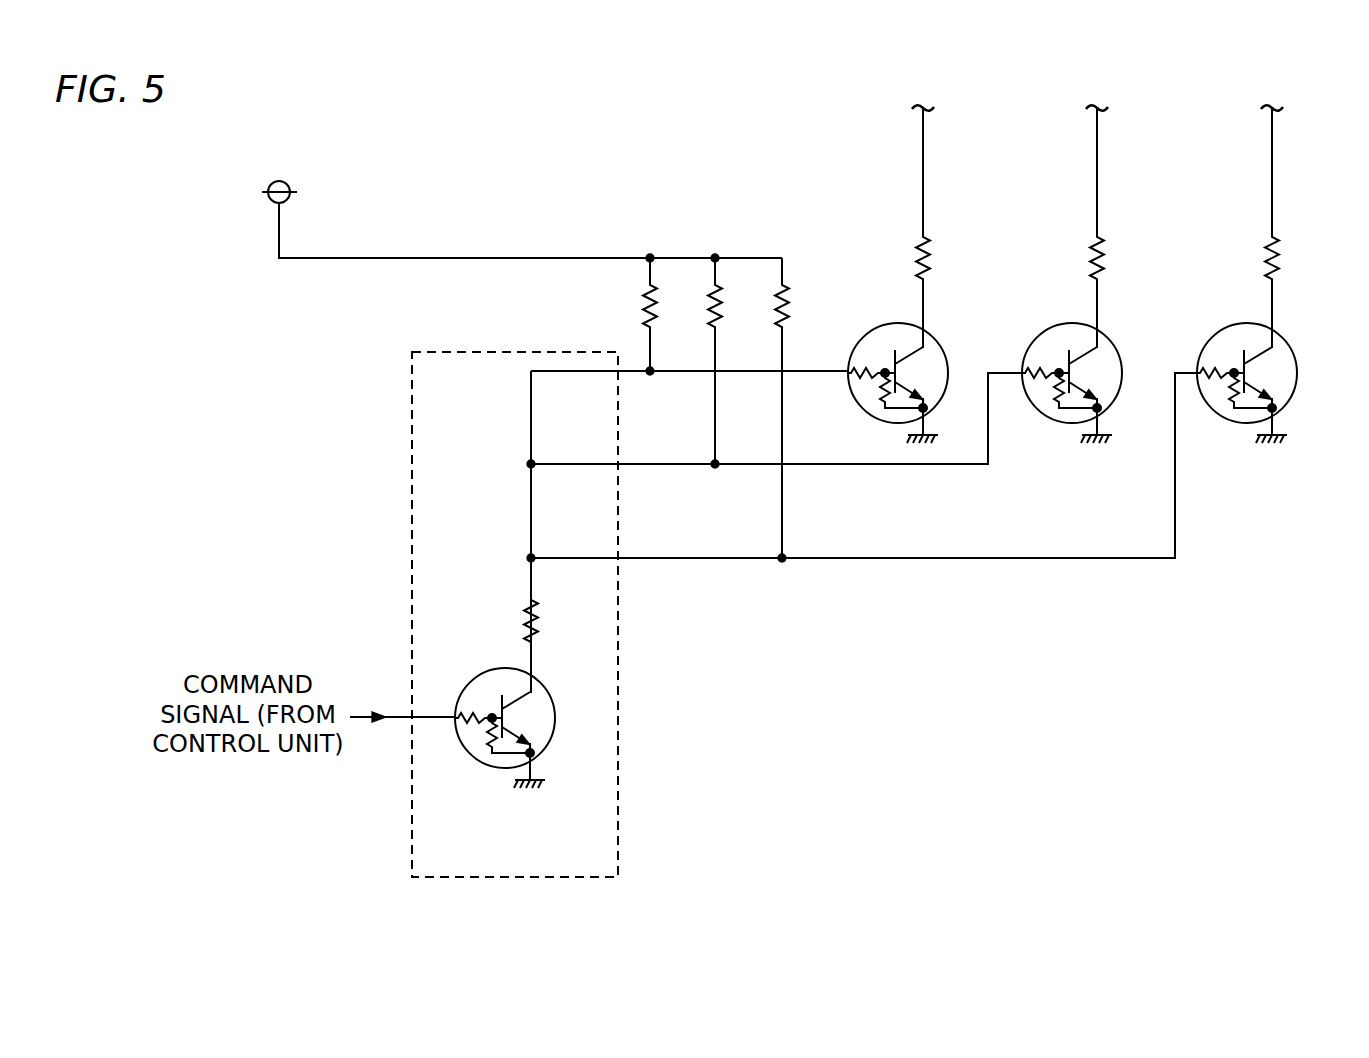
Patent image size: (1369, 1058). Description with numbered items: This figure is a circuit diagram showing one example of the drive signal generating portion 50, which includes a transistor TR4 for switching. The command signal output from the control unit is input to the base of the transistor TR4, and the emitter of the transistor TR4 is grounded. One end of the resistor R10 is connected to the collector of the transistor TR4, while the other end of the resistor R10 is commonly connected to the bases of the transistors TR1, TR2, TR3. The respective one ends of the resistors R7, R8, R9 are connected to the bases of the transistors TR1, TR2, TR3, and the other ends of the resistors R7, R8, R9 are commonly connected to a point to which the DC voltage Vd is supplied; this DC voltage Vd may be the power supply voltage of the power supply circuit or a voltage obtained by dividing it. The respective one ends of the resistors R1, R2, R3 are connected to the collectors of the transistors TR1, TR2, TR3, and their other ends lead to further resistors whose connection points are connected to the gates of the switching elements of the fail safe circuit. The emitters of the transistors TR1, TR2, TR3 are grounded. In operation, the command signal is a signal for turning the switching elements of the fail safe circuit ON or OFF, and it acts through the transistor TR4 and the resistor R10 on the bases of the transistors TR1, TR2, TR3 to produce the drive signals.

The drive signal generating portion 50 is at (409, 489).
The DC voltage Vd is at (522, 204).
The resistor R1 is at (905, 226).
The resistor R2 is at (1079, 226).
The resistor R3 is at (1254, 226).
The resistor R7 is at (630, 314).
The resistor R8 is at (698, 361).
The resistor R9 is at (764, 408).
The resistor R10 is at (507, 625).
The transistor TR1 is at (913, 377).
The transistor TR2 is at (1087, 377).
The transistor TR3 is at (1263, 377).
The transistor TR4 is at (520, 728).